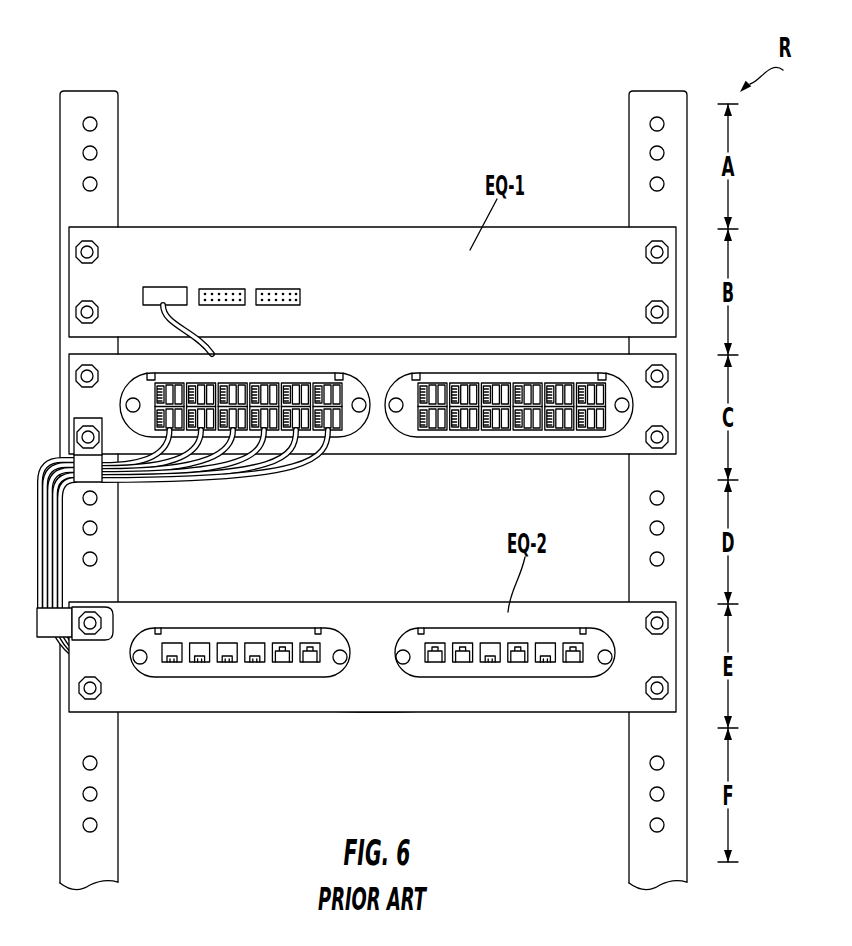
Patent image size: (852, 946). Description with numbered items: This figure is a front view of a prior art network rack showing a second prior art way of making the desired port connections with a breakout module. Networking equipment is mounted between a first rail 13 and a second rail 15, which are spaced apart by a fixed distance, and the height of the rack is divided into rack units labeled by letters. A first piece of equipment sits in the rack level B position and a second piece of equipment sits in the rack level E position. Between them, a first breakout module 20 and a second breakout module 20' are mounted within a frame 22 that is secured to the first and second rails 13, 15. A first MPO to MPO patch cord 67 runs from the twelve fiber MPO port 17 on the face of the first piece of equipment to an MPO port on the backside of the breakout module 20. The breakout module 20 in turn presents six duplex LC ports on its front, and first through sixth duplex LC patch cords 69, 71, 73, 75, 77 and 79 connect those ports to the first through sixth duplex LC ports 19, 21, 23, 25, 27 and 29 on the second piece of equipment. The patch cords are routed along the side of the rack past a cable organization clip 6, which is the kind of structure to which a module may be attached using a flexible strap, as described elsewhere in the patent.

The first rail 13 is at (80, 100).
The second rail 15 is at (650, 97).
The first twelve fiber MPO port 17 is at (170, 280).
The first MPO to MPO patch cord 67 is at (203, 325).
The breakout module 20 is at (245, 354).
The second breakout module 20' is at (509, 354).
The frame 22 is at (72, 432).
The cable organization clip 6 is at (52, 622).
The first duplex LC port 19 is at (285, 643).
The second duplex LC port 21 is at (315, 643).
The third duplex LC port 23 is at (440, 643).
The fourth duplex LC port 25 is at (468, 643).
The fifth duplex LC port 27 is at (522, 643).
The sixth duplex LC port 29 is at (575, 643).
The first duplex LC patch cord 69 is at (138, 478).
The second duplex LC patch cord 71 is at (155, 478).
The third duplex LC patch cord 73 is at (195, 478).
The fourth duplex LC patch cord 75 is at (255, 478).
The fifth duplex LC patch cord 77 is at (297, 481).
The sixth duplex LC patch cord 79 is at (318, 464).